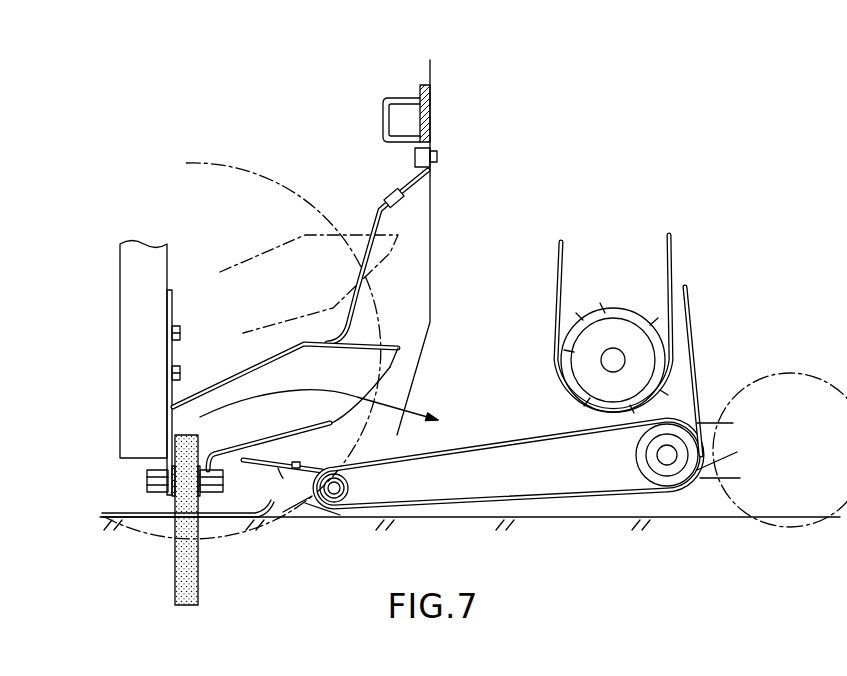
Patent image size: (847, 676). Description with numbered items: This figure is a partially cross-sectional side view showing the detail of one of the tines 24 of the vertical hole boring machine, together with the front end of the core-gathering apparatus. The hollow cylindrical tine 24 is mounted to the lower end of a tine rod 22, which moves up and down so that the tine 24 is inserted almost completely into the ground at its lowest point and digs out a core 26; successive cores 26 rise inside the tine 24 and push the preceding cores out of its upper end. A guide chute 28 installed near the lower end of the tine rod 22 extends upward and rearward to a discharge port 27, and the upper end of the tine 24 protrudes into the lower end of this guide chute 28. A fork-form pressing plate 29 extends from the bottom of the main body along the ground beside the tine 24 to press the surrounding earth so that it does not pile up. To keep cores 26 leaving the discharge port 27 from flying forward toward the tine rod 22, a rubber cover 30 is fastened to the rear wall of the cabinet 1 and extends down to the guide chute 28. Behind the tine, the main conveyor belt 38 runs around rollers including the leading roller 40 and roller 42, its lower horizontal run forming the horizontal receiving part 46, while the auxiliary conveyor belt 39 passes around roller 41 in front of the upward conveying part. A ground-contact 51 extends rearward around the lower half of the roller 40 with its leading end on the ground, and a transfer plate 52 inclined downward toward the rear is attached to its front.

The cabinet 1 is at (425, 220).
The tine rod 22 is at (160, 288).
The tine 24 is at (198, 576).
The core 26 is at (204, 441).
The discharge port 27 is at (390, 378).
The guide chute 28 is at (250, 370).
The pressing plate 29 is at (135, 513).
The rubber cover 30 is at (360, 303).
The main conveyor belt 38 is at (532, 431).
The auxiliary conveyor belt 39 is at (556, 310).
The roller 40 is at (352, 488).
The roller 41 is at (580, 361).
The roller 42 is at (670, 467).
The horizontal receiving part 46 is at (481, 438).
The ground-contact 51 is at (350, 518).
The transfer plate 52 is at (283, 478).